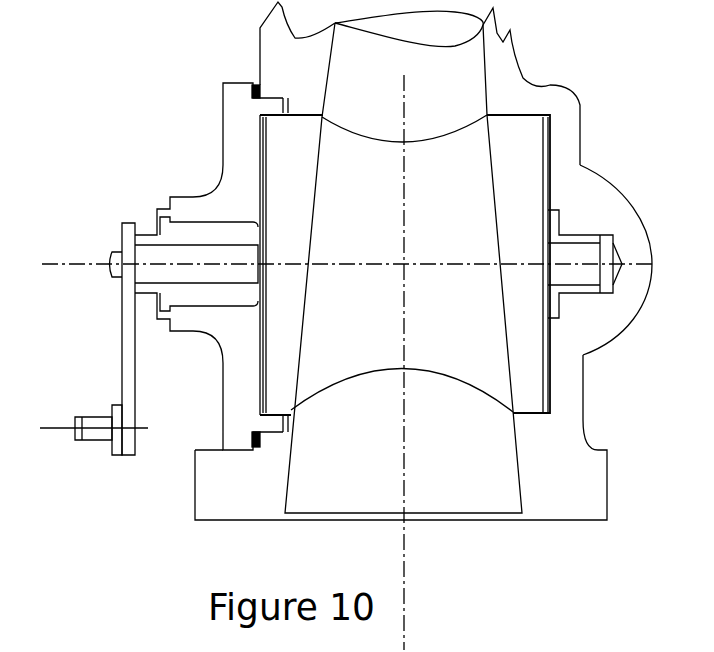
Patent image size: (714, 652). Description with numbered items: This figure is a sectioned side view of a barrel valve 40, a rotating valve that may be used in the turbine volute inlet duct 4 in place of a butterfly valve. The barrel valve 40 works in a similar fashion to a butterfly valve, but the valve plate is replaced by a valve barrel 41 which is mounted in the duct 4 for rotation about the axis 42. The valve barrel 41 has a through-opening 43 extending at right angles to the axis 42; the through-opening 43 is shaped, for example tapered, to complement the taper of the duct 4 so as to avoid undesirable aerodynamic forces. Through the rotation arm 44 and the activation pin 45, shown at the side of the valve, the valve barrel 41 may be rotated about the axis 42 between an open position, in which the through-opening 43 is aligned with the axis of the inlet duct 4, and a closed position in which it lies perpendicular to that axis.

The turbine volute inlet duct 4 is at (440, 67).
The barrel valve 40 is at (525, 112).
The valve barrel 41 is at (528, 183).
The axis 42 is at (82, 262).
The through-opening 43 is at (428, 317).
The rotation arm 44 is at (123, 342).
The activation pin 45 is at (96, 435).